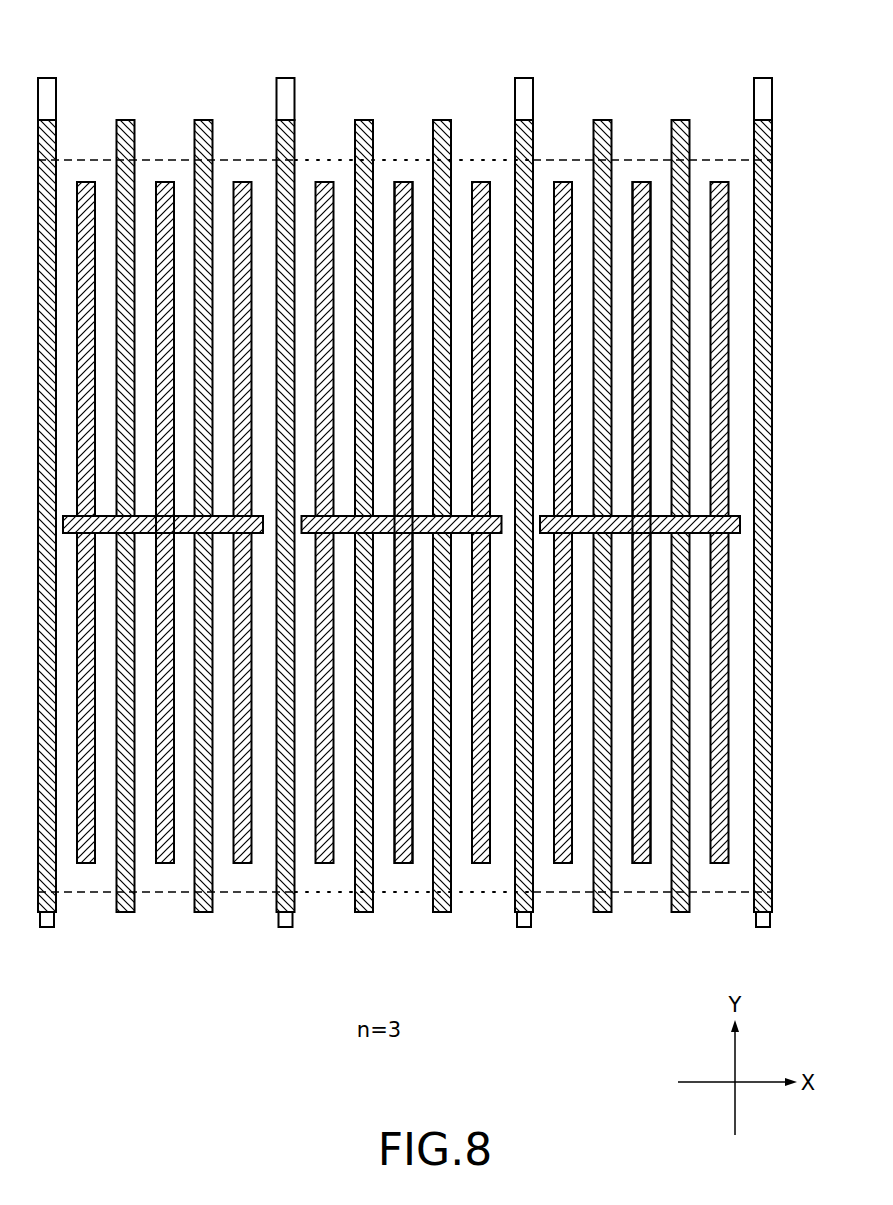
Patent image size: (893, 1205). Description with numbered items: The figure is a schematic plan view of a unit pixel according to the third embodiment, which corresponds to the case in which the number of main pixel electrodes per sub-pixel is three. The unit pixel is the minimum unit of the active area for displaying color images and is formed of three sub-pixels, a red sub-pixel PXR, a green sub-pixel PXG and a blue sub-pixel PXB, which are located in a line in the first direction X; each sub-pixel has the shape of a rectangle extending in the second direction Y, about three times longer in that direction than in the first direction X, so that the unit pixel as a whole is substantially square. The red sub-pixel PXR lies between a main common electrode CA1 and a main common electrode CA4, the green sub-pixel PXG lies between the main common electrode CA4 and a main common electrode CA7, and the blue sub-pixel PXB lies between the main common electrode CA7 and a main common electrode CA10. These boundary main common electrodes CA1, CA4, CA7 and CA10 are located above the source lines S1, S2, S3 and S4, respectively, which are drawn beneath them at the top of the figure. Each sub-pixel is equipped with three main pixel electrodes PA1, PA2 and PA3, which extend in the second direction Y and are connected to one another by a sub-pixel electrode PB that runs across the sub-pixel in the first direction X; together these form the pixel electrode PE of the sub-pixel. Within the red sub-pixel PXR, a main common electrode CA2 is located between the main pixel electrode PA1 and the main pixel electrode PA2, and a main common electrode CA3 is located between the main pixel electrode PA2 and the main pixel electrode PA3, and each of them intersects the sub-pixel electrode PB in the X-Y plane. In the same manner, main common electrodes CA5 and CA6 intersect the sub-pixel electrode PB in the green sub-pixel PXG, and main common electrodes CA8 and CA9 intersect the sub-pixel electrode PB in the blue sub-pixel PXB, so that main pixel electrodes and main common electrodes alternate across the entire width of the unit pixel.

The source line S1 is at (47, 77).
The source line S2 is at (286, 77).
The source line S3 is at (524, 77).
The source line S4 is at (763, 77).
The main common electrode CA1 is at (47, 927).
The main common electrode CA2 is at (126, 912).
The main common electrode CA3 is at (204, 912).
The main common electrode CA4 is at (286, 927).
The main common electrode CA5 is at (364, 912).
The main common electrode CA6 is at (442, 912).
The main common electrode CA7 is at (524, 927).
The main common electrode CA8 is at (602, 912).
The main common electrode CA9 is at (680, 912).
The main common electrode CA10 is at (763, 927).
The main pixel electrode PA1 is at (86, 863).
The main pixel electrode PA2 is at (165, 863).
The main pixel electrode PA3 is at (242, 863).
The sub-pixel electrode PB is at (105, 533).
The pixel electrode PE is at (165, 170).
The red sub-pixel PXR is at (89, 157).
The green sub-pixel PXG is at (328, 157).
The blue sub-pixel PXB is at (566, 157).